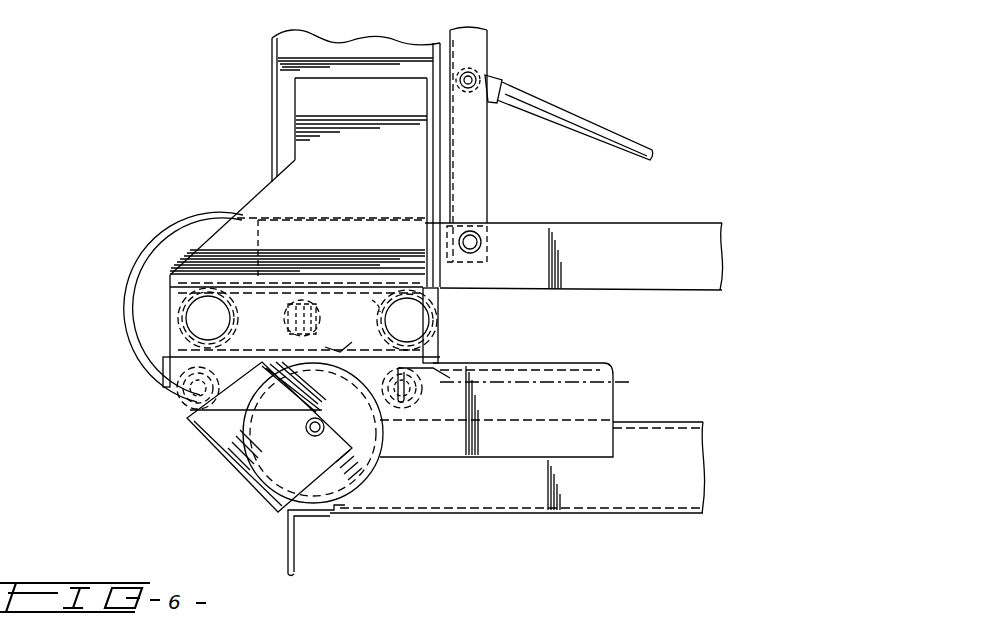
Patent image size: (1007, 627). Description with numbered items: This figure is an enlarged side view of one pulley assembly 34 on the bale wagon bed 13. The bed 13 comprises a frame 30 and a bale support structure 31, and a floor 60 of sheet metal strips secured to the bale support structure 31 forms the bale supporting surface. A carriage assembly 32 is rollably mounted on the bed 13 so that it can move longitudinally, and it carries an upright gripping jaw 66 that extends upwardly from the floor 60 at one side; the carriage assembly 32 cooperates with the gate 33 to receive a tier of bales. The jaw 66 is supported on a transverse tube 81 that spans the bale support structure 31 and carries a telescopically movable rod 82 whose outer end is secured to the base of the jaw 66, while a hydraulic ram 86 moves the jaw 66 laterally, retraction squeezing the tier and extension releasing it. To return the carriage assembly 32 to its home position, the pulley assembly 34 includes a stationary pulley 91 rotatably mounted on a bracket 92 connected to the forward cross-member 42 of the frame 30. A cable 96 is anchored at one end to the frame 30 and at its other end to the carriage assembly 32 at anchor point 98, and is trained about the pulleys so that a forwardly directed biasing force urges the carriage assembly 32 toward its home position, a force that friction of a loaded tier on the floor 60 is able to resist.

The bale wagon bed 13 is at (592, 86).
The frame 30 is at (592, 430).
The bale support structure 31 is at (243, 238).
The carriage assembly 32 is at (457, 310).
The gate 33 is at (507, 178).
The pulley assembly 34 is at (399, 455).
The forward cross-member 42 is at (226, 399).
The floor 60 is at (642, 233).
The gripping jaw 66 is at (266, 121).
The tube 81 is at (235, 308).
The rod 82 is at (210, 323).
The hydraulic ram 86 is at (302, 318).
The stationary pulley 91 is at (337, 475).
The bracket 92 is at (233, 430).
The cable 96 is at (337, 346).
The cable anchor point 98 is at (377, 307).